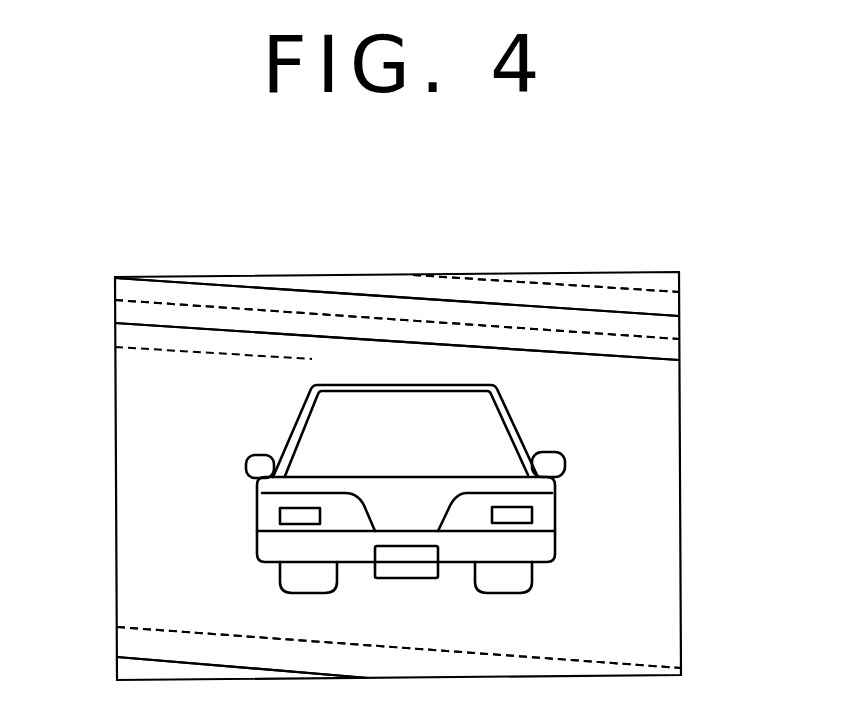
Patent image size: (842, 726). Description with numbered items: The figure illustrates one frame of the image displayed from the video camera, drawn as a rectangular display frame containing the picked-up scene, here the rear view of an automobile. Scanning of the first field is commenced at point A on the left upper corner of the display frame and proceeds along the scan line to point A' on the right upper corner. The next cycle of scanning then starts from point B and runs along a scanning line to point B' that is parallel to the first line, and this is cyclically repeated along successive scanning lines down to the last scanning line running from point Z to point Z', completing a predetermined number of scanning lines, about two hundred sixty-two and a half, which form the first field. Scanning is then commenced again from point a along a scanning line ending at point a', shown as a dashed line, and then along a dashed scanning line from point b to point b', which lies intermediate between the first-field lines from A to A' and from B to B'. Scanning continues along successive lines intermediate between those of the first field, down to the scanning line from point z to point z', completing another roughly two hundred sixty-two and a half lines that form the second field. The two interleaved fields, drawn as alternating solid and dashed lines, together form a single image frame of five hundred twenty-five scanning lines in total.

The second-field starting scan point a is at (536, 263).
The second-field first scan line end point a' is at (594, 291).
The second-field second scan line start point b is at (349, 311).
The second-field second scan line end point b' is at (445, 327).
The first-field starting scan point A is at (370, 289).
The first-field first scan line end point A' is at (421, 307).
The first-field second scan line start point B is at (370, 337).
The first-field second scan line end point B' is at (421, 353).
The second-field last scan line start point z is at (382, 638).
The second-field last scan line end point z' is at (414, 654).
The first-field last scan line start point Z is at (225, 664).
The first-field last scan line end point Z' is at (271, 691).